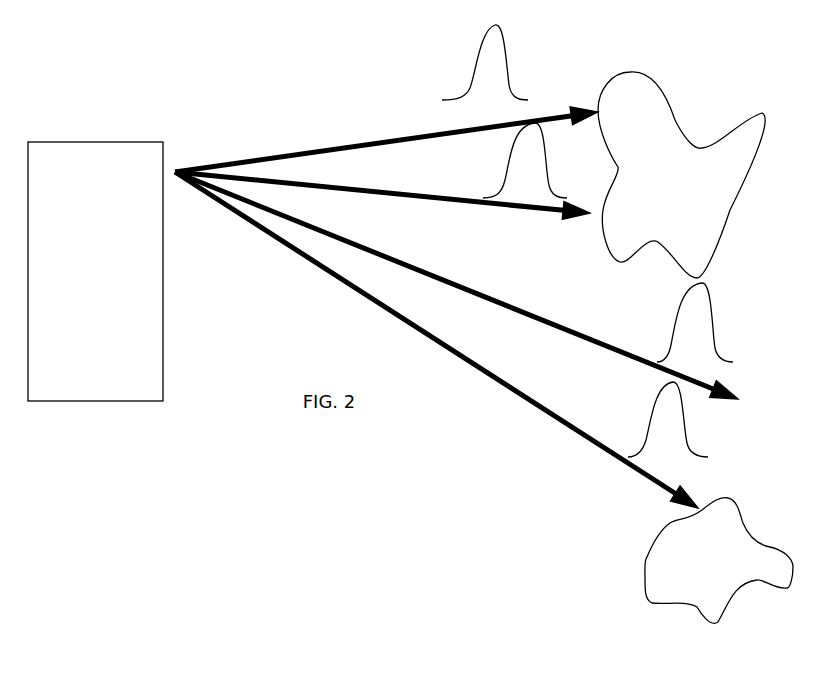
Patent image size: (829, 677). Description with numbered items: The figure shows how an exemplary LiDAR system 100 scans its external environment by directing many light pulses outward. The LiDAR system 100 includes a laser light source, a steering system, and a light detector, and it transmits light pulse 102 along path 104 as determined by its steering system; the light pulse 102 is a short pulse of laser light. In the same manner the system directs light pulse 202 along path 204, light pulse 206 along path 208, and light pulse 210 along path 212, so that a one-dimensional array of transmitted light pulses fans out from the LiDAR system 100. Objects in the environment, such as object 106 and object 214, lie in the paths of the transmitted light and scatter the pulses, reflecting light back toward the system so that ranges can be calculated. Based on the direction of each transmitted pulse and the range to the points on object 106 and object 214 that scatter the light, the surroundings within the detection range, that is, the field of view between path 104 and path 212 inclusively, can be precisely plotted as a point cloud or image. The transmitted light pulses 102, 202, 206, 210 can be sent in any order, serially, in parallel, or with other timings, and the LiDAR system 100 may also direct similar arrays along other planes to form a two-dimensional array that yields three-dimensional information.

The LiDAR system 100 is at (72, 206).
The light pulse 102 is at (483, 61).
The path 104 is at (385, 140).
The object 106 is at (671, 188).
The light pulse 202 is at (512, 160).
The path 204 is at (448, 197).
The light pulse 206 is at (678, 322).
The path 208 is at (442, 275).
The light pulse 210 is at (652, 419).
The path 212 is at (522, 390).
The object 214 is at (686, 570).